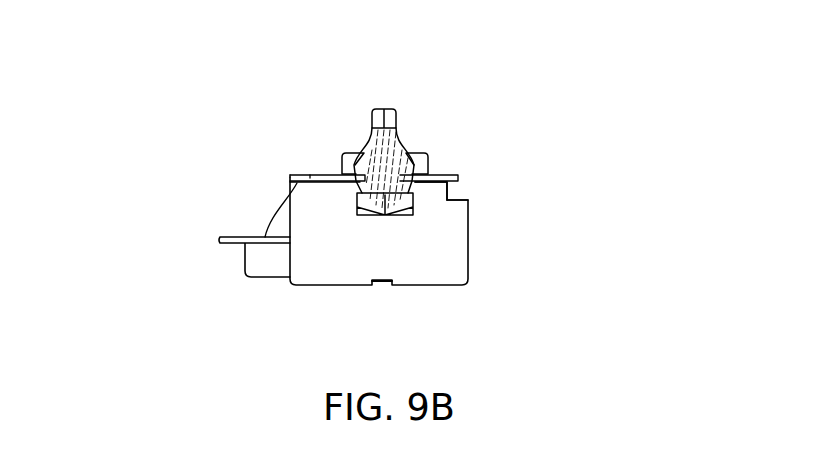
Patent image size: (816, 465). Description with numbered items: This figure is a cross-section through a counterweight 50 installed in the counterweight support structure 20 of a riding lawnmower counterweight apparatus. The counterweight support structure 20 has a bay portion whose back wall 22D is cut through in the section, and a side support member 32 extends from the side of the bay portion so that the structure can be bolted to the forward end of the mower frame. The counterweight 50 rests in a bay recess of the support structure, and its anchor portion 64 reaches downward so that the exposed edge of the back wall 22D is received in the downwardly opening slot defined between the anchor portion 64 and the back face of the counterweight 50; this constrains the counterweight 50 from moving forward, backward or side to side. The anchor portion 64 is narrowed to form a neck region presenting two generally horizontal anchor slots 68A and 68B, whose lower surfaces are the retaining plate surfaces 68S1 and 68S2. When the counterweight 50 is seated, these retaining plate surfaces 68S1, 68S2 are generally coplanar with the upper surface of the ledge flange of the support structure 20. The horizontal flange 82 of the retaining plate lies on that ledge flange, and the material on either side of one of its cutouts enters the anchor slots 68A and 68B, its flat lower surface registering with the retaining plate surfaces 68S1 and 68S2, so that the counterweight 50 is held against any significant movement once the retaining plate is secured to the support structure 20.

The counterweight support structure 20 is at (274, 176).
The back wall 22D is at (362, 248).
The side support member 32 is at (249, 237).
The counterweight 50 is at (402, 105).
The anchor portion 64 is at (424, 215).
The anchor slot 68A is at (413, 157).
The anchor slot 68B is at (367, 174).
The retaining plate surface 68S1 is at (413, 192).
The retaining plate surface 68S2 is at (355, 196).
The horizontal flange 82 is at (441, 176).